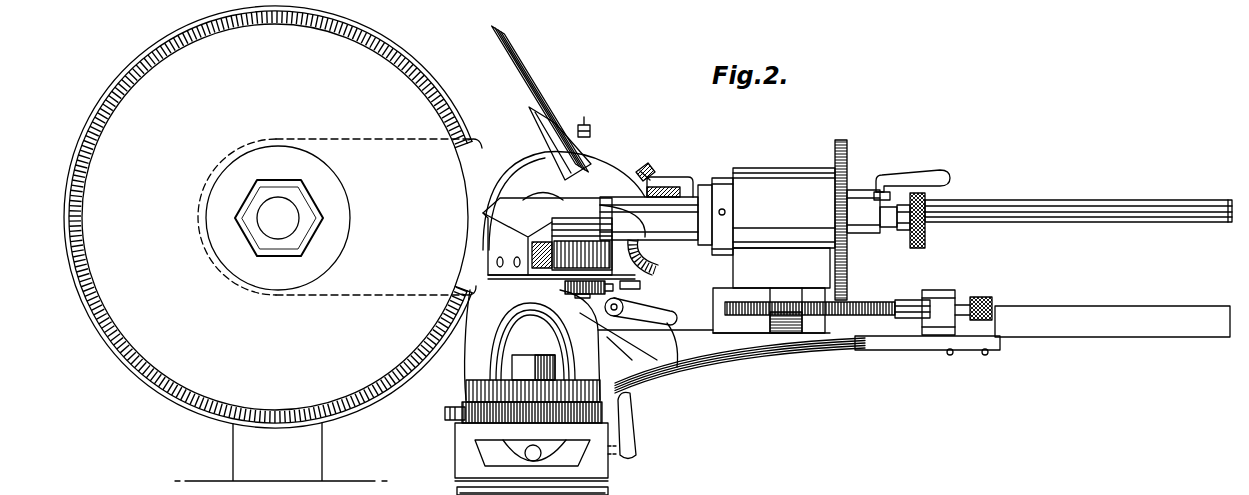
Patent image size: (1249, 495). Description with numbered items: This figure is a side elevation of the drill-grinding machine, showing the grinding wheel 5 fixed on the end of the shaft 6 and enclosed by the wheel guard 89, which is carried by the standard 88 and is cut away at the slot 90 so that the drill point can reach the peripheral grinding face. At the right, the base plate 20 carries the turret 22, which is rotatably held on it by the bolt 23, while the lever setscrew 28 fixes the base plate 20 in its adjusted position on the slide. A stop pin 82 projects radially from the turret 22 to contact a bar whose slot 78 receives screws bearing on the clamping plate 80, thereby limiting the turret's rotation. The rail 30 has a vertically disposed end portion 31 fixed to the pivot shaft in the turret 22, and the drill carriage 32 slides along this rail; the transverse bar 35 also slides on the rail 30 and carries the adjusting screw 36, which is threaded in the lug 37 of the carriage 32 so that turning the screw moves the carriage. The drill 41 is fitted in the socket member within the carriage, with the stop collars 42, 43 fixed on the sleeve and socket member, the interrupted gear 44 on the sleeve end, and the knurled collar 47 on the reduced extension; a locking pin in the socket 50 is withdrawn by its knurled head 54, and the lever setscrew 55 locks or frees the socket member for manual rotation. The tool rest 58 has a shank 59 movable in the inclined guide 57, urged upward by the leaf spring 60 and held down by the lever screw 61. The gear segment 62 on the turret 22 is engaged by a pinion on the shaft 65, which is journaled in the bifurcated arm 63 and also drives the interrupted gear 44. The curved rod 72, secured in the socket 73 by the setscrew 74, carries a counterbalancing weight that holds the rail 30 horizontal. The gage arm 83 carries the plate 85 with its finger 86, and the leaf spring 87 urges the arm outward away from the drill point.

The grinding wheel 5 is at (433, 68).
The shaft 6 is at (278, 218).
The base plate 20 is at (460, 445).
The turret 22 is at (492, 361).
The bolt 23 is at (535, 342).
The lever setscrew 28 is at (636, 446).
The rail 30 is at (1100, 313).
The end portion of rail 31 is at (510, 182).
The drill carriage 32 is at (771, 295).
The transverse bar 35 is at (955, 300).
The adjusting screw 36 is at (880, 310).
The lug 37 is at (793, 336).
The drill 41 is at (652, 212).
The stop collar 42 is at (736, 202).
The stop collar 43 is at (720, 229).
The interrupted gear 44 is at (850, 166).
The knurled collar 47 is at (930, 206).
The socket 50 is at (878, 228).
The knurled head 54 is at (908, 230).
The lever setscrew 55 is at (905, 179).
The inclined guide 57 is at (609, 332).
The tool rest 58 is at (577, 220).
The shank 59 is at (640, 350).
The leaf spring 60 is at (715, 356).
The lever screw 61 is at (677, 367).
The gear segment 62 is at (656, 262).
The arm 63 is at (641, 181).
The shaft 65 is at (1068, 199).
The curved rod 72 is at (523, 86).
The socket 73 is at (548, 122).
The setscrew 74 is at (591, 130).
The slot 78 is at (615, 494).
The clamping plate 80 is at (590, 488).
The stop pin 82 is at (447, 410).
The arm 83 is at (557, 284).
The plate 85 is at (500, 243).
The finger 86 is at (483, 221).
The leaf spring 87 is at (560, 295).
The standard 88 is at (307, 463).
The wheel guard 89 is at (146, 382).
The slot 90 is at (463, 138).